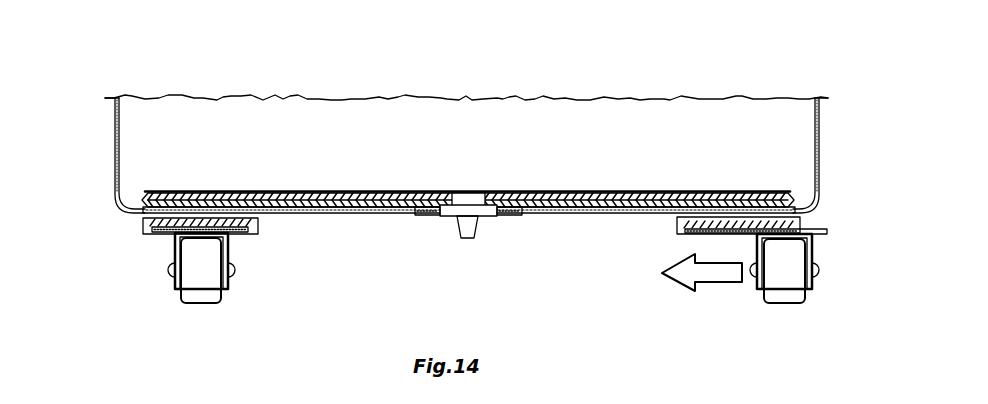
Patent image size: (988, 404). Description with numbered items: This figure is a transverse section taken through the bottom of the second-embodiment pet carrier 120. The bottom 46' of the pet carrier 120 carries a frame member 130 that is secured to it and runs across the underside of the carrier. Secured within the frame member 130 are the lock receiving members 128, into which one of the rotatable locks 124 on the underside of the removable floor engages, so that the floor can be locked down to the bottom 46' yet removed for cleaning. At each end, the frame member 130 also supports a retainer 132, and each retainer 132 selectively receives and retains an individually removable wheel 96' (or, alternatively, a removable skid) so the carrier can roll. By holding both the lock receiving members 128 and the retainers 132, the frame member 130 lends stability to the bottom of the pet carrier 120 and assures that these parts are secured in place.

The pet carrier 120 is at (205, 68).
The bottom 46' is at (468, 252).
The frame member 130 is at (538, 214).
The rotatable lock 124 is at (465, 239).
The lock receiving member 128 is at (428, 216).
The retainer 132 is at (148, 227).
The removable wheel 96' is at (493, 309).